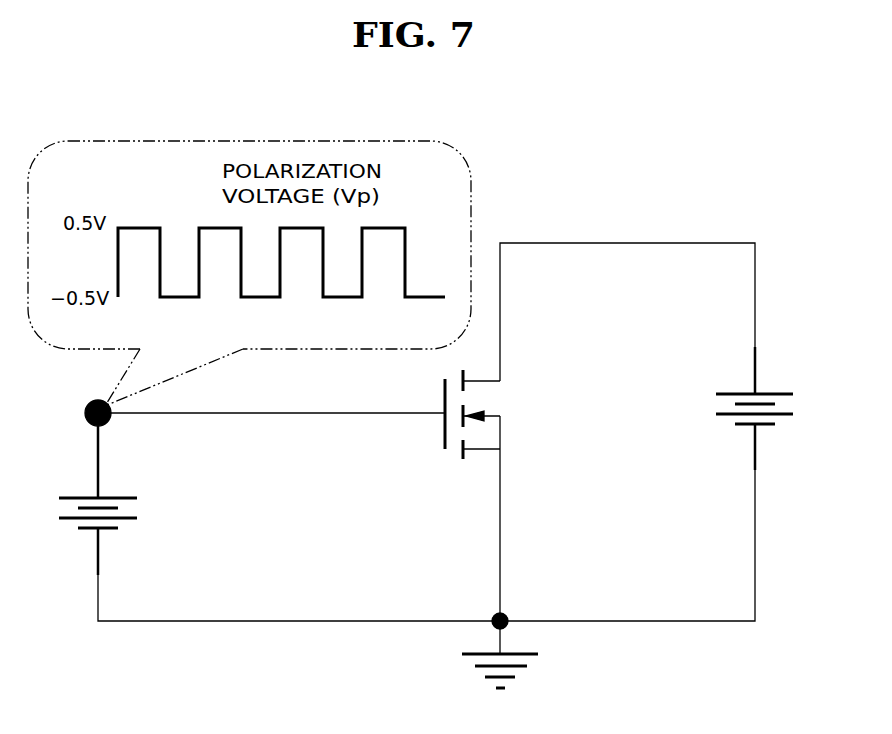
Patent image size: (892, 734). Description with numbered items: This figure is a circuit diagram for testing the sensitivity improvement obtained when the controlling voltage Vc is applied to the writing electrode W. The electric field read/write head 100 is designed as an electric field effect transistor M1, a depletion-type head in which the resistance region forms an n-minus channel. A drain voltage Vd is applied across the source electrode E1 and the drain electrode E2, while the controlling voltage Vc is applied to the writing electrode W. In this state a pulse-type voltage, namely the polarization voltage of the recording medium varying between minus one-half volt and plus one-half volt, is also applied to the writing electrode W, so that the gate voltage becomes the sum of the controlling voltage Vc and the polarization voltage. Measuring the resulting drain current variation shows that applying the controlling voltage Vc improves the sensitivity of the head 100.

The electric field read/write head 100 is at (478, 441).
The transistor M1 is at (430, 402).
The source electrode E1 is at (465, 373).
The drain electrode E2 is at (448, 462).
The writing electrode W is at (465, 409).
The controlling voltage Vc is at (112, 500).
The drain voltage source Vd is at (770, 408).